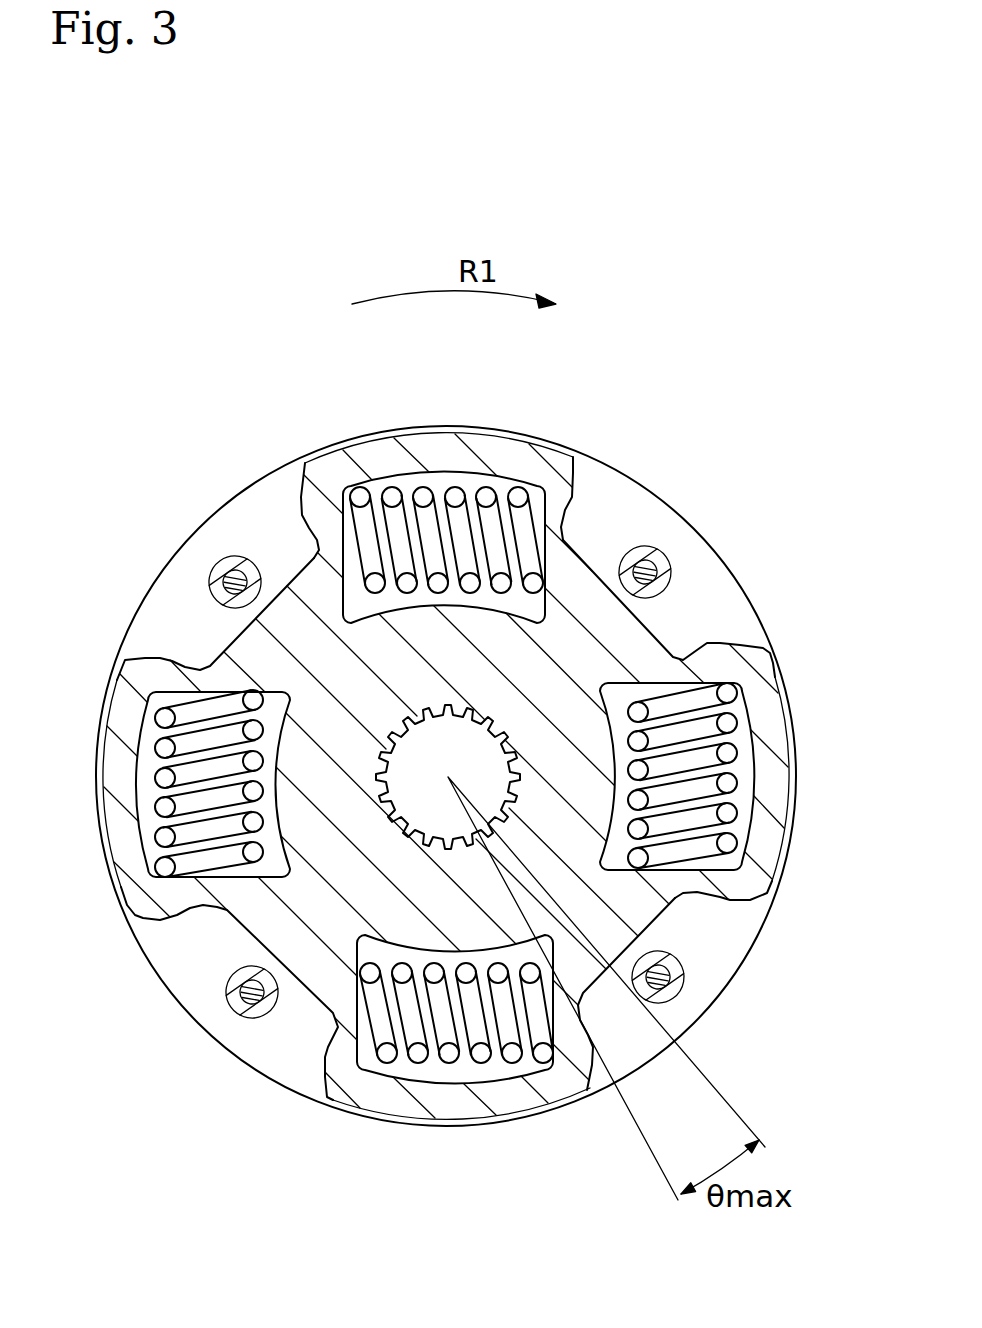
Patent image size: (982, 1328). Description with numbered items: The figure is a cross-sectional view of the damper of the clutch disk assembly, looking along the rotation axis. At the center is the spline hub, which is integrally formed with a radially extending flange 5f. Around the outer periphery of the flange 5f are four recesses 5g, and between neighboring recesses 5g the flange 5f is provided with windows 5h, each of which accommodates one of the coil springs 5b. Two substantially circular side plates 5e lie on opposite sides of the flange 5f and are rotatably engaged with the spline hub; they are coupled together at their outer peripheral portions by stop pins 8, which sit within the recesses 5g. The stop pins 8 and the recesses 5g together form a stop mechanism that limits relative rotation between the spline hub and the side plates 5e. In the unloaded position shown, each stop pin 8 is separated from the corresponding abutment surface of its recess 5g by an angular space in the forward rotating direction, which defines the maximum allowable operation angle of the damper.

The coil springs 5b is at (458, 493).
The side plates 5e is at (162, 625).
The flange 5f is at (333, 550).
The recesses 5g is at (583, 505).
The windows 5h is at (432, 480).
The stop pins 8 is at (687, 983).